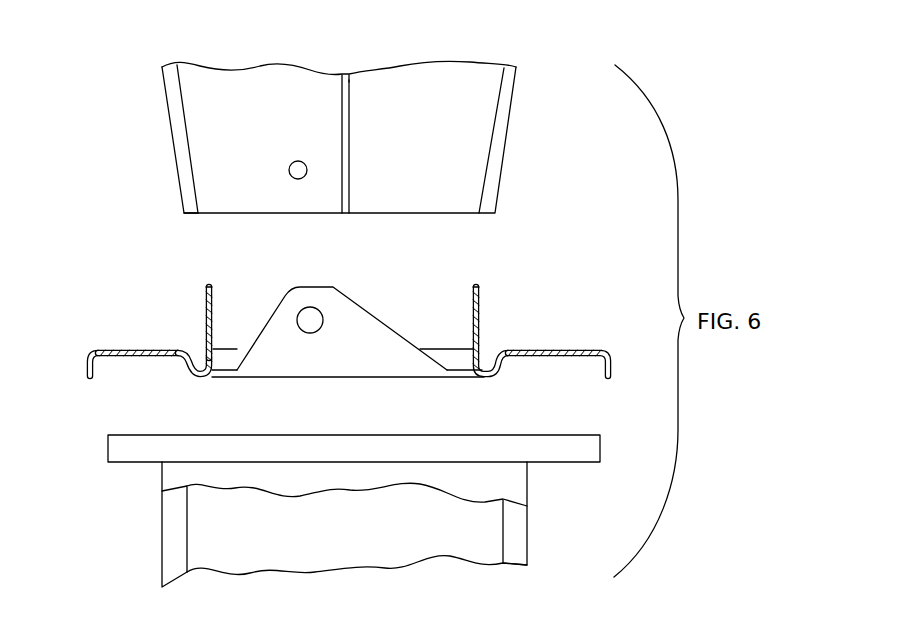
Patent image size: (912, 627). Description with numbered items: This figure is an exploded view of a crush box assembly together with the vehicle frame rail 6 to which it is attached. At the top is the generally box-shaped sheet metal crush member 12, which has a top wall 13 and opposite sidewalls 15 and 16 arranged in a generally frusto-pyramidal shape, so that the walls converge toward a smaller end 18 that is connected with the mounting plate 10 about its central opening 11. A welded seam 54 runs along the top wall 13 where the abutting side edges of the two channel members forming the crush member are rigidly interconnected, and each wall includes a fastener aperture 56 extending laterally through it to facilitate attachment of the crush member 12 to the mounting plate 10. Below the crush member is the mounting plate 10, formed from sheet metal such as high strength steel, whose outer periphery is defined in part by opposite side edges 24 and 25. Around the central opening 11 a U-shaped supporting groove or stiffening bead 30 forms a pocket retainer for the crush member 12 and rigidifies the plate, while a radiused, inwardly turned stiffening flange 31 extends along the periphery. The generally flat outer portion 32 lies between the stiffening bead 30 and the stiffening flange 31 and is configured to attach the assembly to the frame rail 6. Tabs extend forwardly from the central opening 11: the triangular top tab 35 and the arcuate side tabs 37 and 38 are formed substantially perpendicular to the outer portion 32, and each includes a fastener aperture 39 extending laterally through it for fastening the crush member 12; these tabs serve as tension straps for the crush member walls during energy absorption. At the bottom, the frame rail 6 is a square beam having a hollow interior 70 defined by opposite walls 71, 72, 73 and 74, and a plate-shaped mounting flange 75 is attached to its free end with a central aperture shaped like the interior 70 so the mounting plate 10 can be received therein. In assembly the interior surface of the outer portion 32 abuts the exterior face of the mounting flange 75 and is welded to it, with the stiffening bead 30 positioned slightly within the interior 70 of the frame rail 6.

The vehicle frame rail 6 is at (162, 515).
The mounting plate 10 is at (427, 331).
The central opening 11 is at (353, 355).
The crush member 12 is at (344, 126).
The top wall 13 is at (413, 87).
The sidewall 15 is at (162, 99).
The sidewall 16 is at (511, 113).
The smaller end 18 is at (182, 203).
The side edge 24 is at (351, 337).
The side edge 25 is at (613, 363).
The stiffening bead 30 is at (190, 378).
The stiffening flange 31 is at (86, 371).
The outer portion 32 is at (140, 348).
The top tab 35 is at (342, 310).
The side tab 37 is at (204, 290).
The side tab 38 is at (480, 293).
The fastener aperture 39 is at (306, 310).
The seam 54 is at (343, 97).
The fastener aperture 56 is at (289, 172).
The hollow interior 70 is at (337, 519).
The wall 71 is at (325, 548).
The wall 72 is at (458, 482).
The wall 73 is at (172, 561).
The wall 74 is at (521, 544).
The mounting flange 75 is at (110, 463).